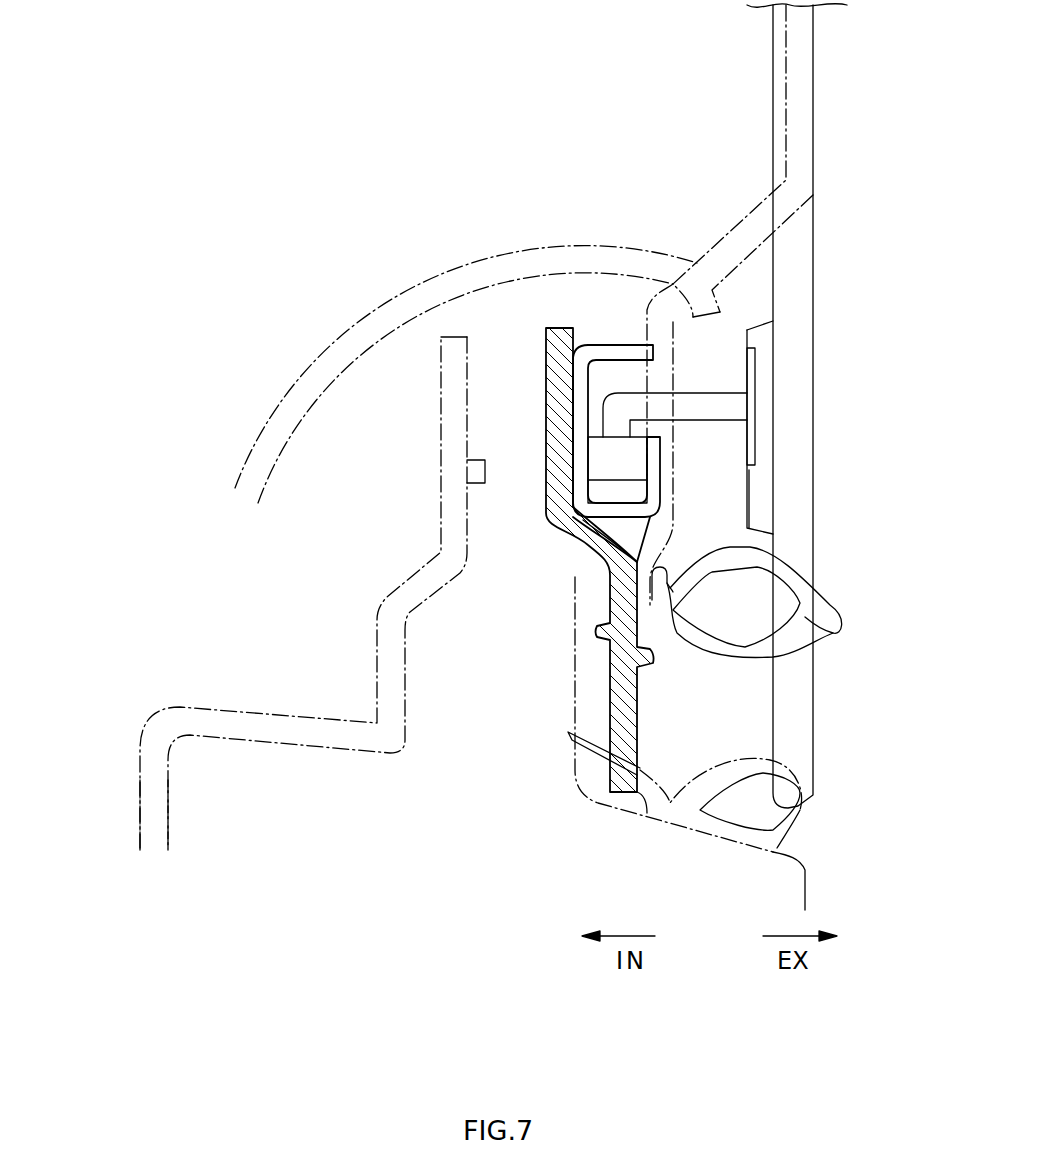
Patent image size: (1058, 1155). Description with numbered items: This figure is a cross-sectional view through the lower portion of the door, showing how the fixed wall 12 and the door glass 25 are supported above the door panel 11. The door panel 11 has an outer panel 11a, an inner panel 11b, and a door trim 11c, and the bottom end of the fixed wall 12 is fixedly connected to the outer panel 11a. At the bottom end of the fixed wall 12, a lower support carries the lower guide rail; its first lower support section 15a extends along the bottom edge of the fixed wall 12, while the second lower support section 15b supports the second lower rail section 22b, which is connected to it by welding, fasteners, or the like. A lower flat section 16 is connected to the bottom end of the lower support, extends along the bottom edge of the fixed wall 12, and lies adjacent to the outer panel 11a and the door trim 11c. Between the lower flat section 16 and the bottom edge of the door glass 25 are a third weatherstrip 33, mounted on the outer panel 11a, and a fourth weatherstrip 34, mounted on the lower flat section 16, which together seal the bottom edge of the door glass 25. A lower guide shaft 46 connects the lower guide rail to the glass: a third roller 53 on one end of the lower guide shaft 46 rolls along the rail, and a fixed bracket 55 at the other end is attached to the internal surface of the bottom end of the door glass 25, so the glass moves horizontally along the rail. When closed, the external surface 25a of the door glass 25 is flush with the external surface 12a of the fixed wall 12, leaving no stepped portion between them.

The door panel 11 is at (187, 660).
The outer panel 11a is at (808, 890).
The inner panel 11b is at (150, 795).
The door trim 11c is at (362, 322).
The fixed wall 12 is at (786, 63).
The external surface of the fixed wall 12a is at (813, 100).
The first lower support section 15a is at (773, 322).
The second lower support section 15b is at (548, 472).
The lower flat section 16 is at (610, 707).
The second lower rail section 22b is at (655, 500).
The door glass 25 is at (803, 406).
The external surface of the door glass 25a is at (830, 368).
The third weatherstrip 33 is at (795, 826).
The fourth weatherstrip 34 is at (840, 628).
The lower guide shaft 46 is at (707, 413).
The third roller 53 is at (600, 457).
The fixed bracket 55 is at (763, 483).